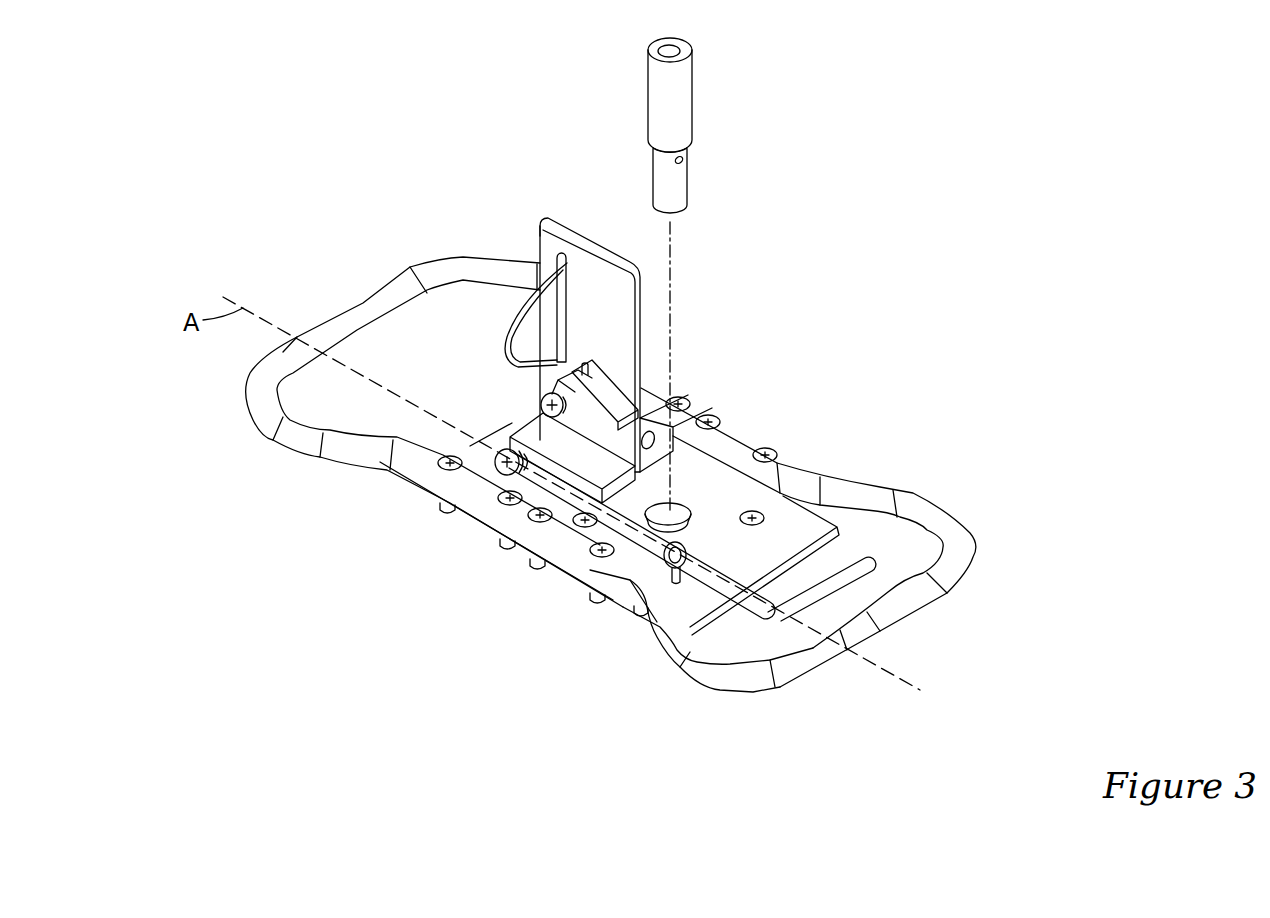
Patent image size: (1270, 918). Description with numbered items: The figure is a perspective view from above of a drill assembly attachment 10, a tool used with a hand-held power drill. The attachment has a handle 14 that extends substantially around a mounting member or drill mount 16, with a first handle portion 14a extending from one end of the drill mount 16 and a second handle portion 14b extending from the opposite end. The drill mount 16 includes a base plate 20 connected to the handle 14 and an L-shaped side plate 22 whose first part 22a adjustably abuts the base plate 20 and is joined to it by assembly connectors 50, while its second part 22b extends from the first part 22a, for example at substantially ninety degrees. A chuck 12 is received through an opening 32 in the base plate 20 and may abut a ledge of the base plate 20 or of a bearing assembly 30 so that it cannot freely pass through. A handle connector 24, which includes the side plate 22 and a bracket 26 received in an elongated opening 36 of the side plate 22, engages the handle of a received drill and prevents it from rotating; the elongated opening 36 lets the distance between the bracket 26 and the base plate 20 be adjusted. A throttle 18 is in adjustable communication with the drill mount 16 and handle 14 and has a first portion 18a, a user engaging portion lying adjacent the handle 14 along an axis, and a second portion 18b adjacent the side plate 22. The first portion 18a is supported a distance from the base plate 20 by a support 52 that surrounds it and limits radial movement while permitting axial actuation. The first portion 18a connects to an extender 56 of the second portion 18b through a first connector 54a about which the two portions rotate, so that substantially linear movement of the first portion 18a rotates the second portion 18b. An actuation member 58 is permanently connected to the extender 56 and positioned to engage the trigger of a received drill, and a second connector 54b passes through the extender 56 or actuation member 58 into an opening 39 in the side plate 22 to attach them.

The drill assembly attachment 10 is at (262, 170).
The chuck 12 is at (683, 99).
The handle 14 is at (447, 262).
The first handle portion 14a is at (762, 675).
The second handle portion 14b is at (360, 305).
The drill mount 16 is at (484, 366).
The throttle 18 is at (573, 500).
The first portion of the throttle 18a is at (855, 604).
The second portion of the throttle 18b is at (628, 372).
The base plate 20 is at (688, 529).
The side plate 22 is at (657, 335).
The first part of the side plate 22a is at (690, 400).
The second part of the side plate 22b is at (640, 297).
The handle connector 24 is at (484, 337).
The bracket 26 is at (517, 318).
The bearing assembly 30 is at (680, 507).
The opening 32 is at (645, 508).
The opening 36 is at (573, 272).
The opening 39 is at (584, 368).
The assembly connectors 50 is at (777, 450).
The support 52 is at (640, 617).
The first connector 54a is at (503, 467).
The second connector 54b is at (546, 402).
The extender 56 is at (535, 433).
The actuation member 58 is at (660, 440).